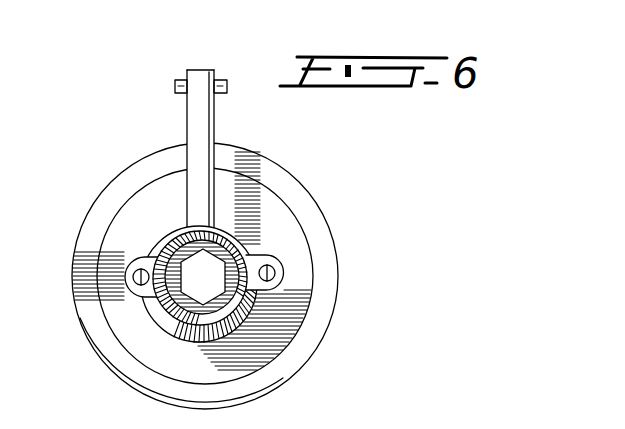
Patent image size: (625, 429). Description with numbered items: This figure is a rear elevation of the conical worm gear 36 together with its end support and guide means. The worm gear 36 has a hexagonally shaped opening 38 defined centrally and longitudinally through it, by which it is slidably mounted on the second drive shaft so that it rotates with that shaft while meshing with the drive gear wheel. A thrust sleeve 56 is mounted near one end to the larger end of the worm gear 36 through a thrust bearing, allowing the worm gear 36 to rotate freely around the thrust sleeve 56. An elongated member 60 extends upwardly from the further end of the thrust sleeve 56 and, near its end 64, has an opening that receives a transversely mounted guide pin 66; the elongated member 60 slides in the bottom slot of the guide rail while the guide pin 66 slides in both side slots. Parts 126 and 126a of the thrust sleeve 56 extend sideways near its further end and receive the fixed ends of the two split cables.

The conical worm gear 36 is at (337, 287).
The hexagonally shaped opening 38 is at (218, 282).
The thrust sleeve 56 is at (229, 236).
The elongated member 60 is at (195, 127).
The end of the elongated member 64 is at (198, 70).
The guide pin 66 is at (222, 80).
The part of the thrust sleeve 126 is at (130, 297).
The part of the thrust sleeve 126a is at (278, 262).